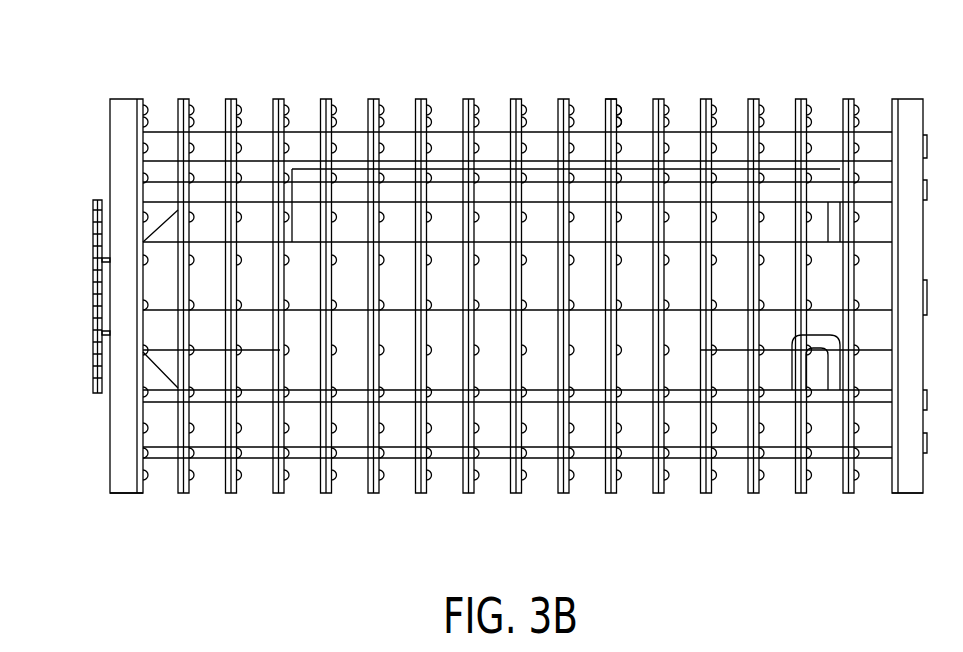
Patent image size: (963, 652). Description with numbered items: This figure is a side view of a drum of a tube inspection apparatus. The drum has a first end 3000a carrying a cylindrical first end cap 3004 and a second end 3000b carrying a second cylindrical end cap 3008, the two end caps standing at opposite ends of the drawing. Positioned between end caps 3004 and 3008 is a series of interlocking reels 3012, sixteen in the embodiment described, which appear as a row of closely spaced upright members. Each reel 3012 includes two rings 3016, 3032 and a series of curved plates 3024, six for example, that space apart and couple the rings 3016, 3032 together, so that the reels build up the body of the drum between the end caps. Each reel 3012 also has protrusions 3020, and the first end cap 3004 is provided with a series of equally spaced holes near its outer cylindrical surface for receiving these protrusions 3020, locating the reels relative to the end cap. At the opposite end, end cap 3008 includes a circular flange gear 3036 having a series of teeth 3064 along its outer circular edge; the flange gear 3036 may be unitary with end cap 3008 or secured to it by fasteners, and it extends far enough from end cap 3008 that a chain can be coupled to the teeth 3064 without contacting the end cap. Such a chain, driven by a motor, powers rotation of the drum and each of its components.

The second cylindrical end cap 3008 is at (124, 99).
The reel 3012 is at (278, 99).
The curved plate 3024 is at (405, 212).
The ring 3016 is at (600, 99).
The ring 3032 is at (611, 99).
The protrusion 3020 is at (621, 108).
The cylindrical first end cap 3004 is at (908, 99).
The teeth 3064 is at (93, 210).
The circular flange gear 3036 is at (93, 390).
The second end 3000b is at (125, 494).
The first end 3000a is at (906, 494).